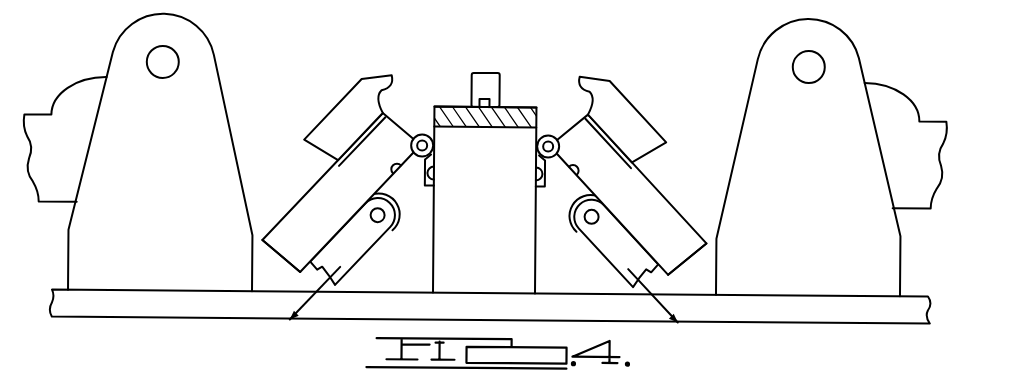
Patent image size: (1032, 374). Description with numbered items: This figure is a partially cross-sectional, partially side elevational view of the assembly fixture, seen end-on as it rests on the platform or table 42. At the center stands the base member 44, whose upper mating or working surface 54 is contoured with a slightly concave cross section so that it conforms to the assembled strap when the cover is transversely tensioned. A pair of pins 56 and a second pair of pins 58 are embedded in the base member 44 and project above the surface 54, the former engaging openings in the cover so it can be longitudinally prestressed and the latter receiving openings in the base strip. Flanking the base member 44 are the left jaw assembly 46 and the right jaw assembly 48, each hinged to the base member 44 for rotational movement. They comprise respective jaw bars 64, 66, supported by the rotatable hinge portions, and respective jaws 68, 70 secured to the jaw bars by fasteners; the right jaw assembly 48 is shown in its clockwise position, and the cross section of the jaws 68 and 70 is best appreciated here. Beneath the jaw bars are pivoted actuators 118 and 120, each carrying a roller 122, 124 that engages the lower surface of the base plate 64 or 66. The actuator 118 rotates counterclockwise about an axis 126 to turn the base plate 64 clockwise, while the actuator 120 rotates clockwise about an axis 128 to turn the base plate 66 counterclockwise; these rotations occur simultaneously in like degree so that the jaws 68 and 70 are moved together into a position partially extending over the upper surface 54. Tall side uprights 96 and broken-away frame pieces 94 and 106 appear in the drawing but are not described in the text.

The platform or table 42 is at (103, 320).
The base member 44 is at (493, 209).
The left jaw assembly 46 is at (287, 195).
The right jaw assembly 48 is at (677, 184).
The mating or working surface 54 is at (452, 107).
The pins 56 is at (490, 102).
The second pair of pins 58 is at (488, 73).
The jaw bar 64 is at (282, 248).
The jaw bar 66 is at (686, 257).
The jaw 68 is at (330, 88).
The jaw 70 is at (652, 103).
The left frame member 94 is at (47, 119).
The upright bracket 96 is at (167, 169).
The right frame member 106 is at (897, 122).
The pivoted actuator 118 is at (352, 268).
The pivoted actuator 120 is at (604, 268).
The roller 122 is at (406, 232).
The roller 124 is at (563, 226).
The axis 126 is at (294, 314).
The axis 128 is at (672, 317).